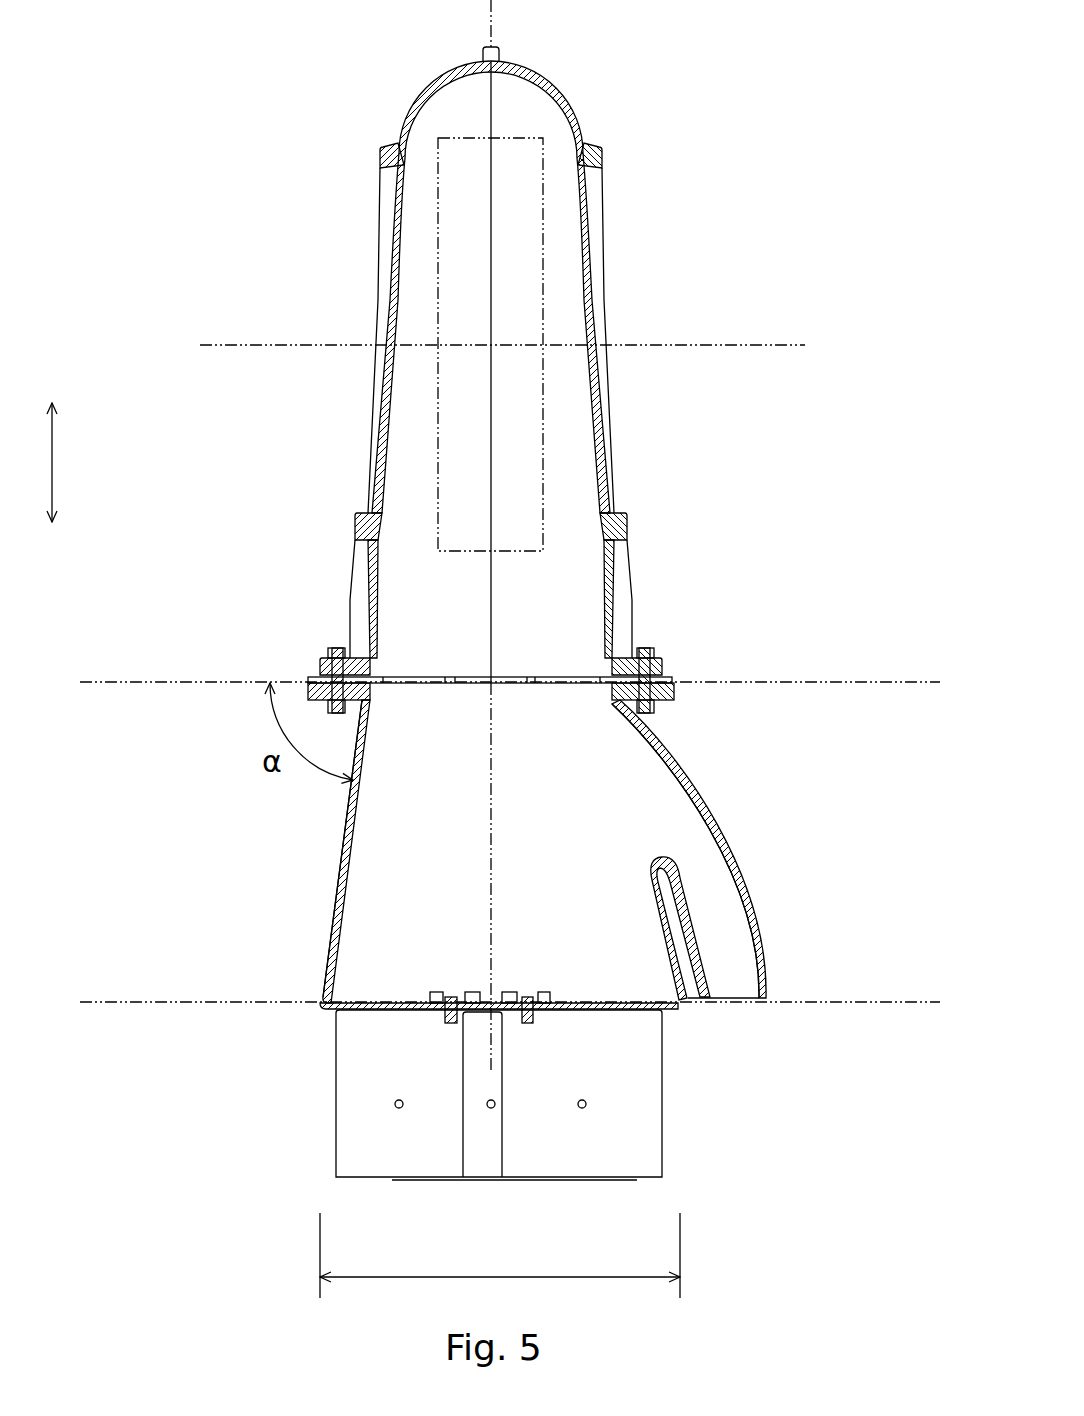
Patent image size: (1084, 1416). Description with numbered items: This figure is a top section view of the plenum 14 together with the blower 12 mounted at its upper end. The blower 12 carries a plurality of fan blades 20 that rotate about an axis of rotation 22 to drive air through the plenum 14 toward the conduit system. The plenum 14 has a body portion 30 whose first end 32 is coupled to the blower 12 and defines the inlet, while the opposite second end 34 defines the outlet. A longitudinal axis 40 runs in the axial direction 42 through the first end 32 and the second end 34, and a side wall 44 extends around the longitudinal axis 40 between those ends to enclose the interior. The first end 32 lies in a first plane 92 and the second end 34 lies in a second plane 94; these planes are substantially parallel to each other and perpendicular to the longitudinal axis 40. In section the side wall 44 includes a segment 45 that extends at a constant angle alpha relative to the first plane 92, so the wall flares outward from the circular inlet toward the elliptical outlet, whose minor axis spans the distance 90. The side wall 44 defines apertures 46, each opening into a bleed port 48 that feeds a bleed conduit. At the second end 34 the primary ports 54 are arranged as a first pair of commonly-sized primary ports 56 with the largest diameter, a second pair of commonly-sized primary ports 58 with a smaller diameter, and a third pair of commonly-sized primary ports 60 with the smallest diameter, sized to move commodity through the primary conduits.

The blower 12 is at (422, 96).
The plenum 14 is at (588, 905).
The fan blades 20 is at (438, 243).
The axis of rotation 22 is at (777, 343).
The body portion 30 is at (717, 811).
The first end 32 is at (680, 690).
The second end 34 is at (357, 1018).
The longitudinal axis 40 is at (491, 12).
The axial direction 42 is at (52, 467).
The side wall 44 is at (546, 905).
The segment 45 is at (328, 947).
The apertures 46 is at (652, 774).
The bleed port 48 is at (752, 910).
The primary ports 54 is at (472, 1134).
The first pair of commonly-sized primary ports 56 is at (660, 1142).
The second pair of commonly-sized primary ports 58 is at (336, 1115).
The third pair of commonly-sized primary ports 60 is at (480, 1135).
The distance 90 is at (578, 1280).
The first plane 92 is at (884, 680).
The second plane 94 is at (107, 1003).